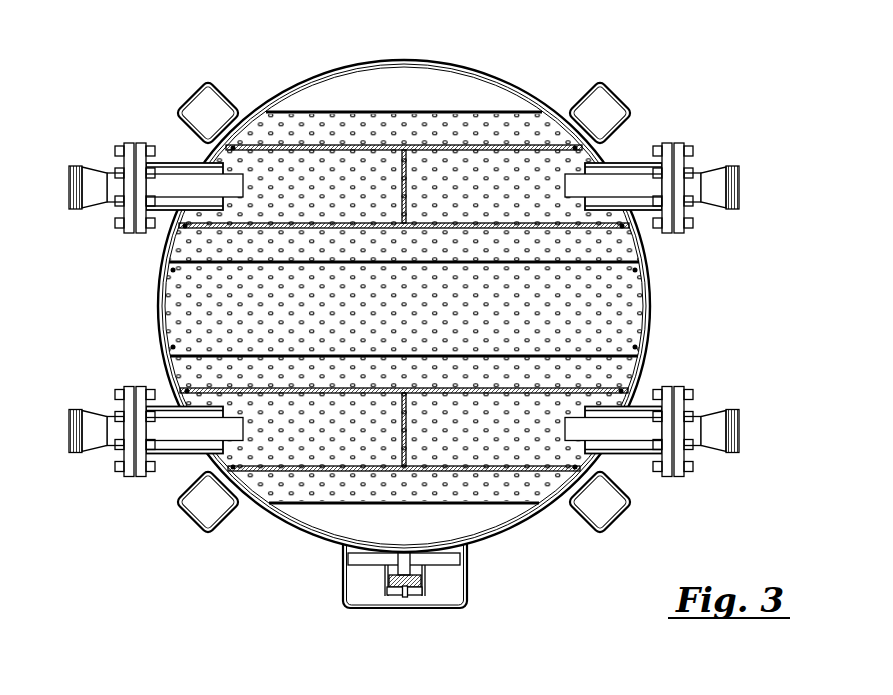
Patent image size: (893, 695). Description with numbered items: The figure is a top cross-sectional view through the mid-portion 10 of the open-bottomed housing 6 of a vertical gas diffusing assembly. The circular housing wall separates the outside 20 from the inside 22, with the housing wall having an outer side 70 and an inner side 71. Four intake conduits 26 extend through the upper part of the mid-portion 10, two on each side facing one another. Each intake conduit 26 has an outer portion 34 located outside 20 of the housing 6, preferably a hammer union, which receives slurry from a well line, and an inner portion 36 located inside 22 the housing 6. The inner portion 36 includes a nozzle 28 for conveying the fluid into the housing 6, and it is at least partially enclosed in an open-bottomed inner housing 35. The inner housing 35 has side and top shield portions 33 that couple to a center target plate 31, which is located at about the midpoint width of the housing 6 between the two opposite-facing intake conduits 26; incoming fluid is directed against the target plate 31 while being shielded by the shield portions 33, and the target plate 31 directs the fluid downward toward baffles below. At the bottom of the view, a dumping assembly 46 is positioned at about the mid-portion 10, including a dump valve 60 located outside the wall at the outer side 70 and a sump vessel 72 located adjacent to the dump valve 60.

The mid-portion 10 is at (421, 322).
The inner side 71 is at (337, 80).
The center target plate 31 is at (400, 173).
The inner housing 35 is at (417, 143).
The nozzle 28 is at (557, 183).
The shield portions 33 is at (433, 143).
The inner portion 36 is at (585, 185).
The outer portion 34 is at (98, 177).
The intake conduit 26 is at (77, 185).
The outside 20 is at (138, 263).
The outer side 70 is at (157, 323).
The open-bottomed housing 6 is at (377, 306).
The inside 22 is at (513, 493).
The sump vessel 72 is at (470, 583).
The dumping assembly 46 is at (431, 322).
The dump valve 60 is at (415, 592).